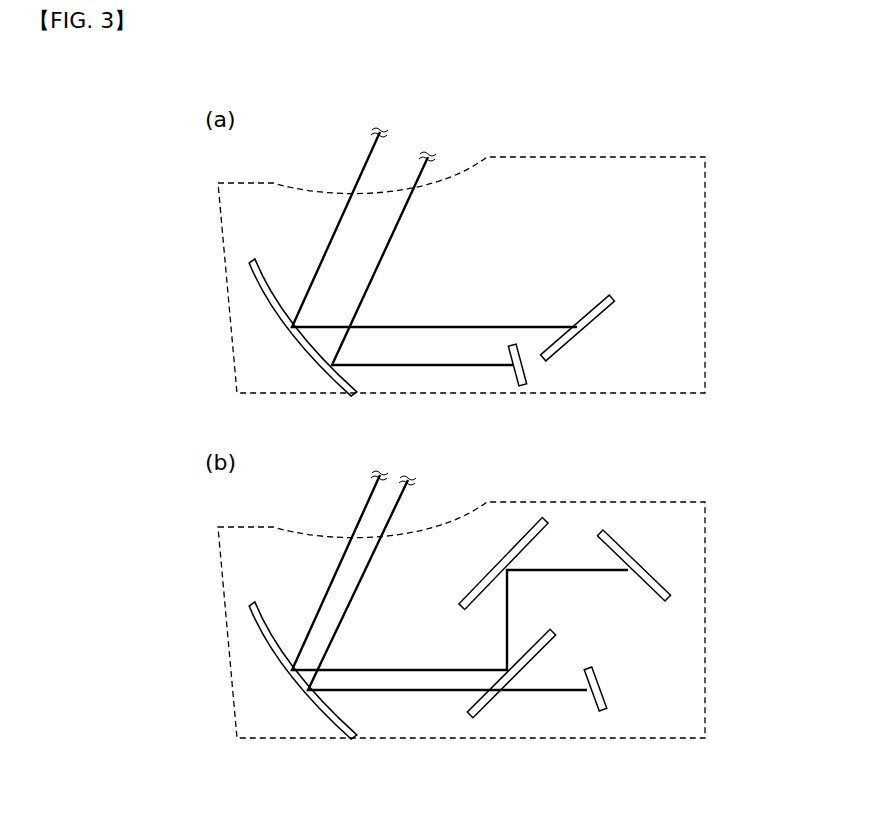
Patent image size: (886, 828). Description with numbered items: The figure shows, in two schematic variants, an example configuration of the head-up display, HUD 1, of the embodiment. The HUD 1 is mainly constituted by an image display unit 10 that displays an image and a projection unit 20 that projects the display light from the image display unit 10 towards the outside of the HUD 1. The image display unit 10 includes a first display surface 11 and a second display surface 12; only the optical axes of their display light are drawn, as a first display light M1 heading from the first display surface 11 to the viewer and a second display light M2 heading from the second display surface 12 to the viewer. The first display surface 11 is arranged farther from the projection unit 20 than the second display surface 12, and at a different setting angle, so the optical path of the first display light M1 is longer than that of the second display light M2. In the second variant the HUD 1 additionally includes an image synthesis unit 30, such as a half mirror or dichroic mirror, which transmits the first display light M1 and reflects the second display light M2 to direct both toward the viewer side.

The HUD 1 is at (707, 156).
The image display unit 10 is at (633, 428).
The first display surface 11 is at (572, 347).
The second display surface 12 is at (527, 388).
The projection unit 20 is at (340, 384).
The image synthesis unit 30 is at (480, 717).
The first display light M1 is at (368, 162).
The second display light M2 is at (432, 166).